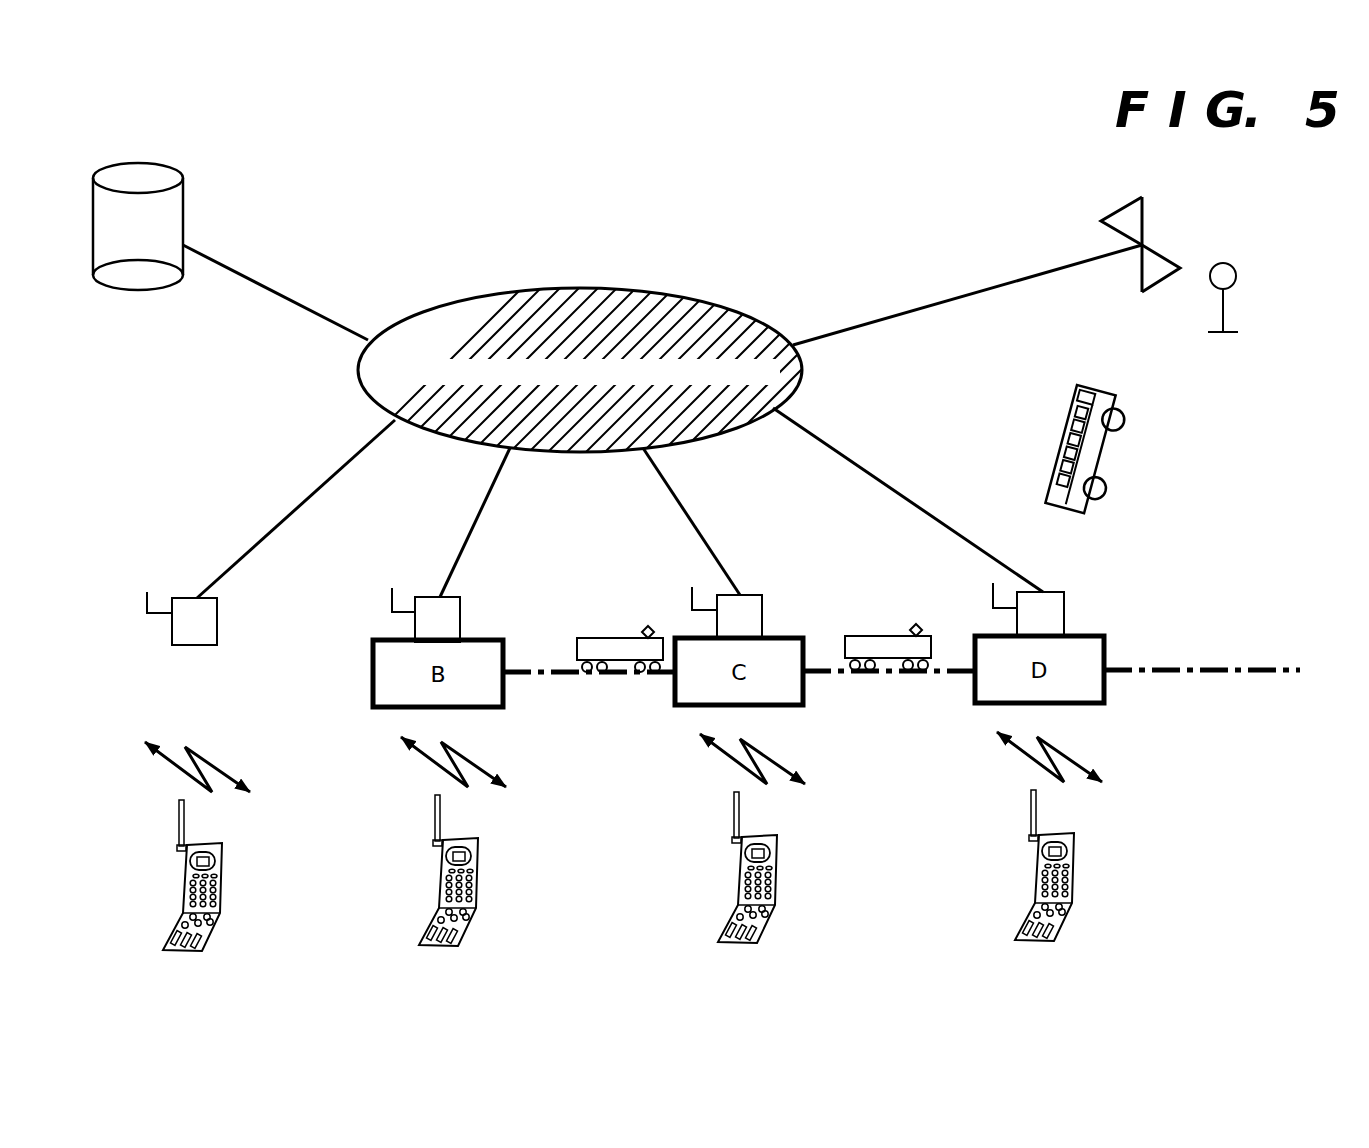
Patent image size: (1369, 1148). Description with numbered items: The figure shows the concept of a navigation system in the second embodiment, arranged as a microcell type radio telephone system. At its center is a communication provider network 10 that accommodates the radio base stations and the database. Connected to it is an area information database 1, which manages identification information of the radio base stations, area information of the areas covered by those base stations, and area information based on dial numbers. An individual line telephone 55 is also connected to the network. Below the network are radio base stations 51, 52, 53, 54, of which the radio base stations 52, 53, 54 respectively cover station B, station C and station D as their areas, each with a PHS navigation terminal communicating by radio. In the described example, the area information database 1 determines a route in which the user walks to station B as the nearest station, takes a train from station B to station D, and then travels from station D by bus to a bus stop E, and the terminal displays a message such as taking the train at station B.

The area information database 1 is at (183, 205).
The communication provider network 10 is at (647, 289).
The radio base station 51 is at (217, 612).
The radio base station 52 is at (460, 612).
The radio base station 53 is at (762, 615).
The radio base station 54 is at (1064, 612).
The individual line telephone 55 is at (1142, 220).
The bus stop E is at (1236, 280).